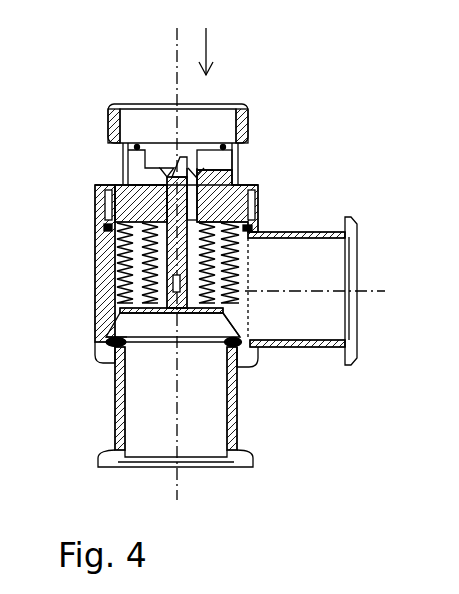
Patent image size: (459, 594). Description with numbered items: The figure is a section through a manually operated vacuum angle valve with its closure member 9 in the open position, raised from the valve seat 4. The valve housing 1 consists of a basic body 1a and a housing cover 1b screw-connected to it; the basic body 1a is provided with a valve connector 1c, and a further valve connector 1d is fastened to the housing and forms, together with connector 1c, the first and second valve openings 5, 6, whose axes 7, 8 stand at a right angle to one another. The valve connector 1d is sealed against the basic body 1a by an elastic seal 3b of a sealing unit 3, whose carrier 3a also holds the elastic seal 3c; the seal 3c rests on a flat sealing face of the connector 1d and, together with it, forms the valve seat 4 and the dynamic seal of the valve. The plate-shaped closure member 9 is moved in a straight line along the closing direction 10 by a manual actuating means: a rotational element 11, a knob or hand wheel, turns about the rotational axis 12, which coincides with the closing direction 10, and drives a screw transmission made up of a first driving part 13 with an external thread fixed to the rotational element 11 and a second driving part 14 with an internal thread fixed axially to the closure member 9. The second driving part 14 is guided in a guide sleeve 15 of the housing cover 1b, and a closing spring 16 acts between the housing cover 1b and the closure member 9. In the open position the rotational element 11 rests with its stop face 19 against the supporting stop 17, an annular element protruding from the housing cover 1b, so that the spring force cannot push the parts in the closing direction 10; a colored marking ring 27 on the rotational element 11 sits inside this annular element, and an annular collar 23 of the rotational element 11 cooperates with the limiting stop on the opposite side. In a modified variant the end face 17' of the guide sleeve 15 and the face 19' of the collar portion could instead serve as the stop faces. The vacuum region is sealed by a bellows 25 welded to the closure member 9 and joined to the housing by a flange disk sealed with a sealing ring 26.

The valve housing 1 is at (92, 362).
The basic body 1a is at (105, 290).
The housing cover 1b is at (229, 200).
The valve connector 1c is at (273, 233).
The valve connector 1d is at (236, 428).
The sealing unit 3 is at (112, 353).
The carrier 3a is at (244, 346).
The elastic seal 3b is at (110, 342).
The elastic seal 3c is at (112, 336).
The valve seat 4 is at (238, 333).
The first valve opening 5 is at (207, 393).
The second valve opening 6 is at (307, 248).
The axis of the first valve opening 7 is at (178, 477).
The axis of the second valve opening 8 is at (376, 293).
The closure member 9 is at (170, 313).
The closing direction 10 is at (208, 48).
The rotational element 11 is at (118, 124).
The rotational axis 12 is at (177, 50).
The first driving part 13 is at (168, 200).
The second driving part 14 is at (136, 243).
The guide sleeve 15 is at (172, 247).
The closing spring 16 is at (158, 263).
The supporting stop 17 is at (138, 123).
The end face of the guide sleeve 17' is at (204, 119).
The stop face 19 is at (264, 157).
The face of the rotational element 19' is at (304, 134).
The annular collar 23 is at (157, 171).
The bellows 25 is at (236, 287).
The sealing ring 26 is at (107, 227).
The marking ring 27 is at (221, 147).